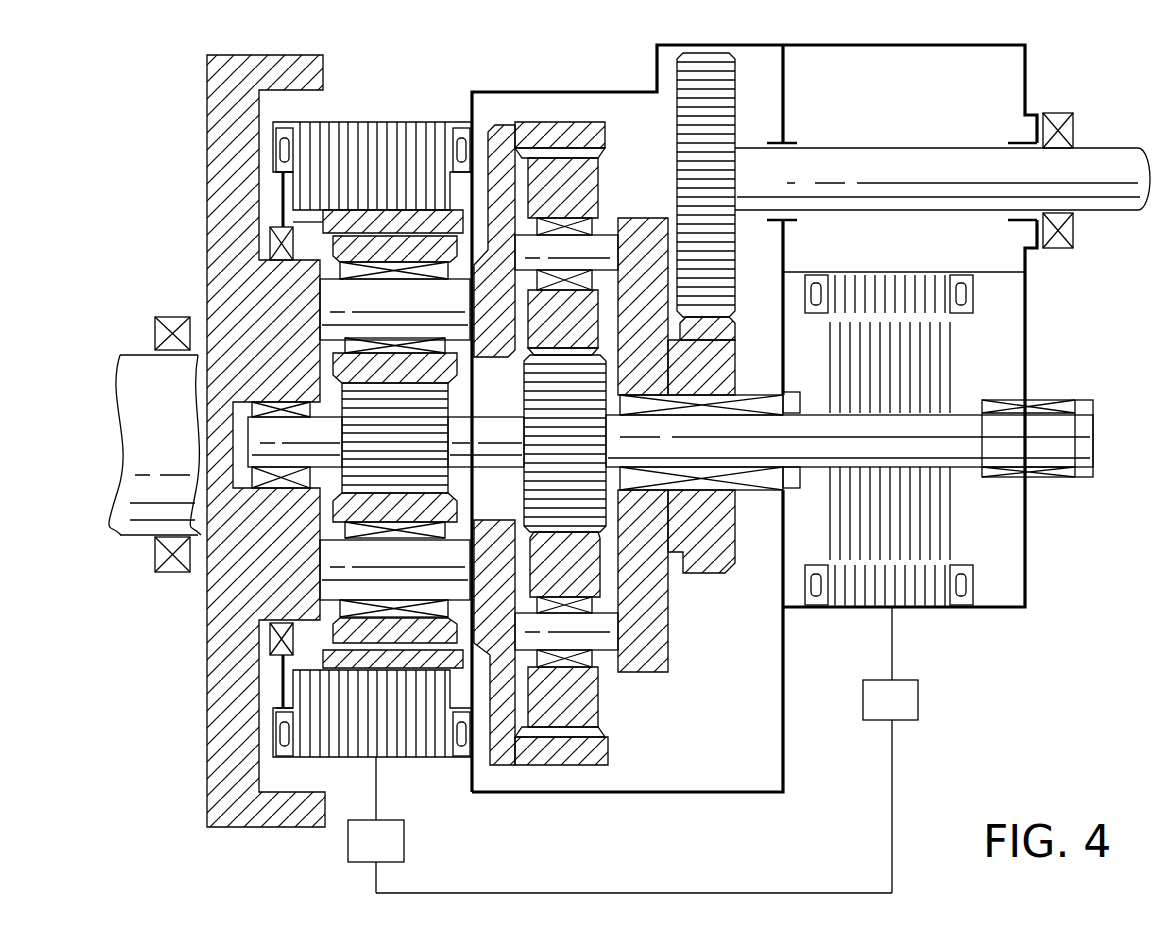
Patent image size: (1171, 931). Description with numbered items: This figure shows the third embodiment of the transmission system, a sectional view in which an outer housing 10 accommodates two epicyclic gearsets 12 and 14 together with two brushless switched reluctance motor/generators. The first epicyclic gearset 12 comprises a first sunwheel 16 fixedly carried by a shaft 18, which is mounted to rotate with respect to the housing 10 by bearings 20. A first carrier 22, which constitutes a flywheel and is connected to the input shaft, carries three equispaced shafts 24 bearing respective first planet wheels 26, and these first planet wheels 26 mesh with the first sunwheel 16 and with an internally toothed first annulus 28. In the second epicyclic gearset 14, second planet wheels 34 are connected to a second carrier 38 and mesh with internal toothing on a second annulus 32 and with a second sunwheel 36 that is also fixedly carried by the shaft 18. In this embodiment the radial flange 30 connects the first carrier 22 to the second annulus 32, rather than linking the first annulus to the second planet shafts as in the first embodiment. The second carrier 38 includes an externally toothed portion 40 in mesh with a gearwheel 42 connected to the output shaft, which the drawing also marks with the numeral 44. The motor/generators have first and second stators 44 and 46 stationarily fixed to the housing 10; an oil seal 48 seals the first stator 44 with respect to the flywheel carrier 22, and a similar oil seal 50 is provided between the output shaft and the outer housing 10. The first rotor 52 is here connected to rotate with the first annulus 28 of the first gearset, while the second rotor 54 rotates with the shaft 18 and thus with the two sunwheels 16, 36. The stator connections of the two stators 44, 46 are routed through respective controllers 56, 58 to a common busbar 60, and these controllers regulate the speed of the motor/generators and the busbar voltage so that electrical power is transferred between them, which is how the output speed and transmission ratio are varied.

The outer housing 10 is at (697, 793).
The first epicyclic gearset 12 is at (463, 475).
The second epicyclic gearset 14 is at (510, 363).
The first sunwheel 16 is at (425, 445).
The shaft 18 is at (1047, 422).
The bearings 20 is at (1057, 475).
The first carrier 22 is at (233, 252).
The shafts 24 is at (342, 298).
The first planet wheels 26 is at (403, 253).
The first annulus 28 is at (298, 190).
The radial flange 30 is at (497, 187).
The second annulus 32 is at (548, 127).
The second planet wheels 34 is at (597, 197).
The second sunwheel 36 is at (575, 430).
The second carrier 38 is at (647, 662).
The externally toothed portion 40 is at (703, 557).
The gearwheel 42 is at (690, 97).
The first stator 44 is at (363, 138).
The second stator 46 is at (927, 610).
The oil seal 48 is at (270, 243).
The oil seal 50 is at (1075, 120).
The first rotor 52 is at (300, 222).
The second rotor 54 is at (943, 530).
The controller 56 is at (348, 845).
The controller 58 is at (913, 722).
The busbar 60 is at (567, 893).